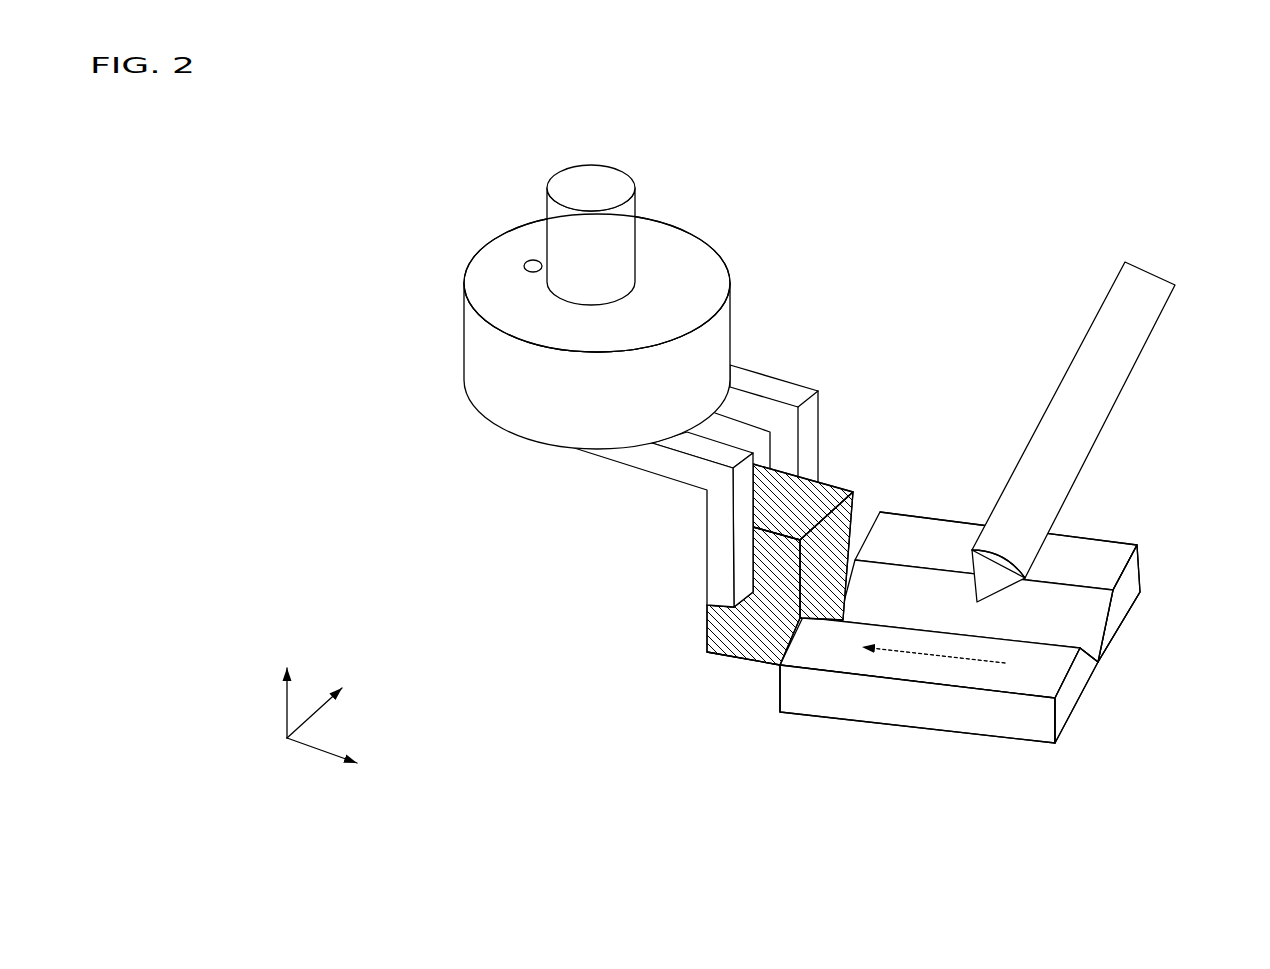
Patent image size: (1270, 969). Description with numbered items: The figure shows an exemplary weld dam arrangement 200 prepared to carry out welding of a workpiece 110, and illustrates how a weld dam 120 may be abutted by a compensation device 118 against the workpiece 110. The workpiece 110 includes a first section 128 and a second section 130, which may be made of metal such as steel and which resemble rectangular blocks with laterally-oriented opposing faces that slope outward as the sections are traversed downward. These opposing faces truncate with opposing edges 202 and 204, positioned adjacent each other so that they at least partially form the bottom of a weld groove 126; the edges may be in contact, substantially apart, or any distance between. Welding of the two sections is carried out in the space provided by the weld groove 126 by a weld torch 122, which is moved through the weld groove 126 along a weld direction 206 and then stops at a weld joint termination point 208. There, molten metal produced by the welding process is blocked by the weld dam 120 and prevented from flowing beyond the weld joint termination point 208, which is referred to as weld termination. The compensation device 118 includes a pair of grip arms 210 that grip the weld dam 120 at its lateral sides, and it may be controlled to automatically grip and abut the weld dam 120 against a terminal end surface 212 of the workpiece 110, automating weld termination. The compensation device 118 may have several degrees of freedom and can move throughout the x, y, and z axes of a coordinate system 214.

The workpiece 110 is at (1191, 683).
The compensation device 118 is at (674, 174).
The weld dam 120 is at (706, 652).
The weld torch 122 is at (1176, 286).
The weld groove 126 is at (1098, 618).
The first section 128 is at (1138, 535).
The second section 130 is at (1061, 723).
The weld dam arrangement 200 is at (960, 61).
The opposing edge 202 is at (1099, 664).
The opposing edge 204 is at (1098, 662).
The weld direction 206 is at (977, 662).
The weld joint termination point 208 is at (863, 597).
The grip arms 210 is at (793, 362).
The terminal end surface 212 is at (765, 693).
The coordinate system 214 is at (337, 623).